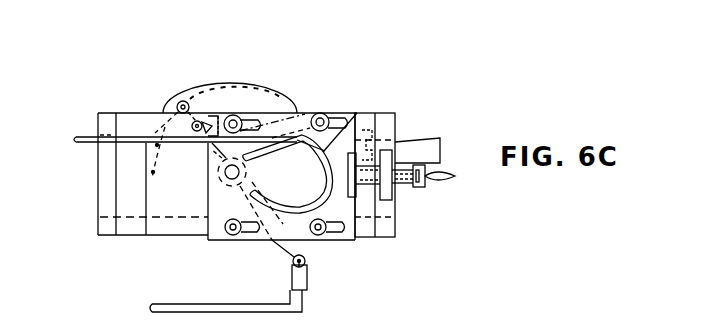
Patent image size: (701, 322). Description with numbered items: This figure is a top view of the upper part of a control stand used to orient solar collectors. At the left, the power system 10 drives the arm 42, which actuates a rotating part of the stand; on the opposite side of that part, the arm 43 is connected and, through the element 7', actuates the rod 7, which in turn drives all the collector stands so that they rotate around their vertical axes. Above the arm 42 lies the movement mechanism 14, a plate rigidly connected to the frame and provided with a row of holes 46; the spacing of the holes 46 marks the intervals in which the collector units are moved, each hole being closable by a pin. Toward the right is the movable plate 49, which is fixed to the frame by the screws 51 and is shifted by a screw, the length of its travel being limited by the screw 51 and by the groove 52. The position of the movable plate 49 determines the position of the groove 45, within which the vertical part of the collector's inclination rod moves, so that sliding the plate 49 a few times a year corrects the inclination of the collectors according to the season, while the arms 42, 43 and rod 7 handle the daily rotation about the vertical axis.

The power system 10 is at (441, 147).
The holes 46 is at (150, 162).
The movement mechanism 14 is at (203, 92).
The arm 42 is at (177, 102).
The screws 51 is at (216, 118).
The groove 52 is at (250, 120).
The movable plate 49 is at (313, 112).
The groove 45 is at (354, 120).
The arm 43 is at (297, 243).
The element 7' is at (271, 277).
The rod 7 is at (226, 287).